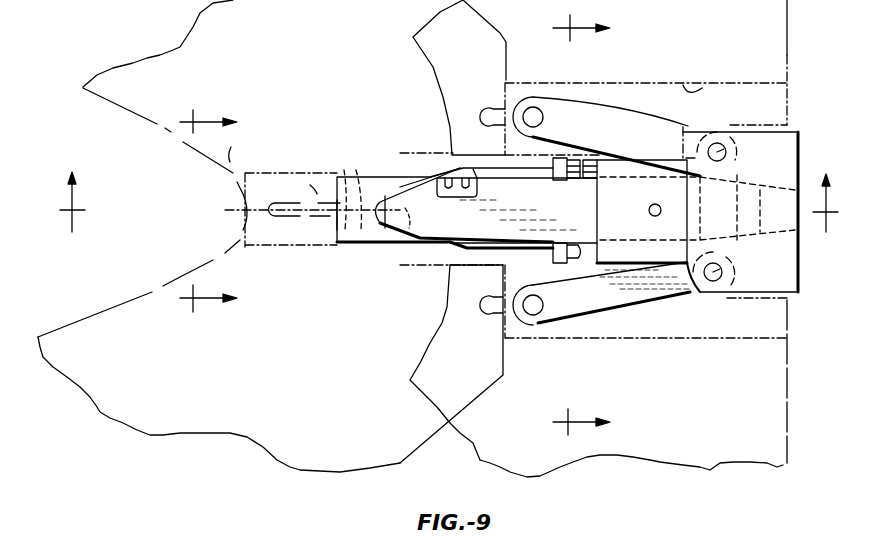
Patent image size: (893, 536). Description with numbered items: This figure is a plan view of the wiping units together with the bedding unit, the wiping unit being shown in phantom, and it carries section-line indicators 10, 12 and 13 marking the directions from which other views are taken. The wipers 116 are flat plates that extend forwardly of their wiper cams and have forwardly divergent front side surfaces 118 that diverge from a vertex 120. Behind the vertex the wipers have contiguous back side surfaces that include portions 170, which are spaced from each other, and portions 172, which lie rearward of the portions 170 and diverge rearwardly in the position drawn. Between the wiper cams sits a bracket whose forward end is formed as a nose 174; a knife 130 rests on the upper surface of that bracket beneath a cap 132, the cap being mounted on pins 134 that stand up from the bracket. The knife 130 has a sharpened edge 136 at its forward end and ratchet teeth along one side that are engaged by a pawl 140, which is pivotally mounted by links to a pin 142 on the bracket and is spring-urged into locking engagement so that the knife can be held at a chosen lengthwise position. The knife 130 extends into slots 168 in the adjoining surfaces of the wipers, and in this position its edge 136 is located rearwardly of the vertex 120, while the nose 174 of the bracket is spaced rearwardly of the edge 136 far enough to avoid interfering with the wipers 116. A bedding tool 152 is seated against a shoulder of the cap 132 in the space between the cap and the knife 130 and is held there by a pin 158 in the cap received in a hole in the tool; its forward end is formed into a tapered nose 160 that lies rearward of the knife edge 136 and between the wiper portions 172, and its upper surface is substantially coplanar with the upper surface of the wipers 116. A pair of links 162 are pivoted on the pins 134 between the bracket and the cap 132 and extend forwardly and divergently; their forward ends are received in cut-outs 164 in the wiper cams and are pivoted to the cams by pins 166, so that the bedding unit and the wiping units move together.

The view direction arrows 10 is at (447, 217).
The section line 12- 12 is at (565, 225).
The section line 13- 13 is at (199, 209).
The wipers 116 is at (215, 424).
The front side surfaces 118 is at (127, 113).
The vertex 120 is at (240, 213).
The knife 130 is at (347, 244).
The cap 132 is at (783, 267).
The pins 134 is at (728, 153).
The sharpened edge 136 is at (337, 224).
The pawl 140 is at (587, 258).
The pin 142 is at (595, 173).
The bedding tool 152 is at (567, 206).
The pin 158 is at (656, 216).
The tapered nose 160 is at (373, 232).
The links 162 is at (592, 113).
The cut-outs 164 is at (700, 87).
The pins 166 is at (535, 307).
The slots 168 is at (246, 146).
The back side surface portions 170 is at (299, 186).
The back side surface portions 172 is at (343, 167).
The nose 174 is at (405, 234).